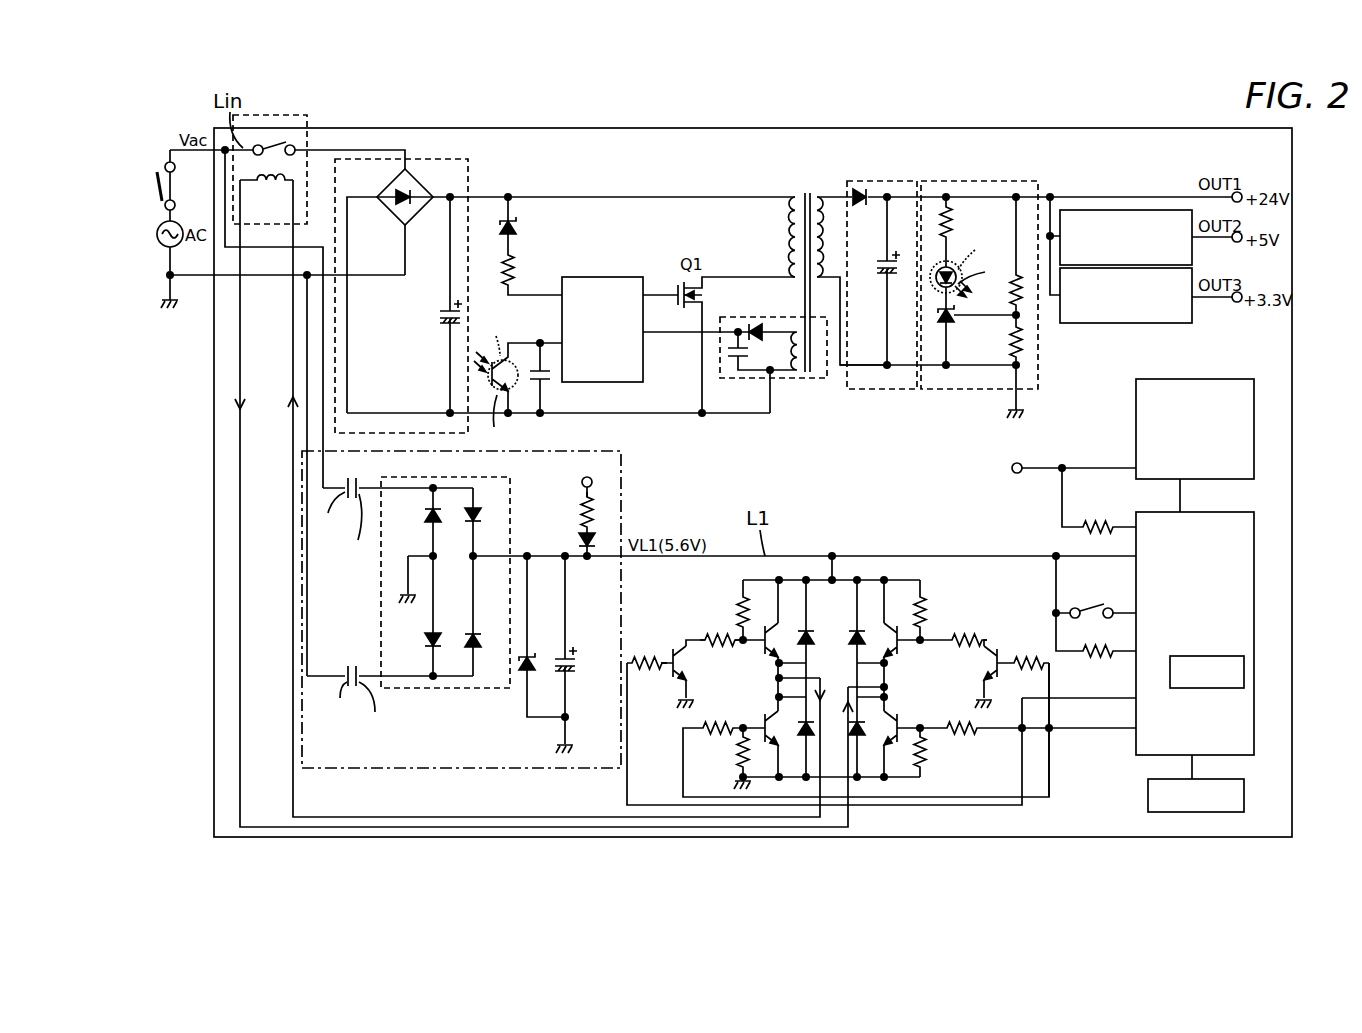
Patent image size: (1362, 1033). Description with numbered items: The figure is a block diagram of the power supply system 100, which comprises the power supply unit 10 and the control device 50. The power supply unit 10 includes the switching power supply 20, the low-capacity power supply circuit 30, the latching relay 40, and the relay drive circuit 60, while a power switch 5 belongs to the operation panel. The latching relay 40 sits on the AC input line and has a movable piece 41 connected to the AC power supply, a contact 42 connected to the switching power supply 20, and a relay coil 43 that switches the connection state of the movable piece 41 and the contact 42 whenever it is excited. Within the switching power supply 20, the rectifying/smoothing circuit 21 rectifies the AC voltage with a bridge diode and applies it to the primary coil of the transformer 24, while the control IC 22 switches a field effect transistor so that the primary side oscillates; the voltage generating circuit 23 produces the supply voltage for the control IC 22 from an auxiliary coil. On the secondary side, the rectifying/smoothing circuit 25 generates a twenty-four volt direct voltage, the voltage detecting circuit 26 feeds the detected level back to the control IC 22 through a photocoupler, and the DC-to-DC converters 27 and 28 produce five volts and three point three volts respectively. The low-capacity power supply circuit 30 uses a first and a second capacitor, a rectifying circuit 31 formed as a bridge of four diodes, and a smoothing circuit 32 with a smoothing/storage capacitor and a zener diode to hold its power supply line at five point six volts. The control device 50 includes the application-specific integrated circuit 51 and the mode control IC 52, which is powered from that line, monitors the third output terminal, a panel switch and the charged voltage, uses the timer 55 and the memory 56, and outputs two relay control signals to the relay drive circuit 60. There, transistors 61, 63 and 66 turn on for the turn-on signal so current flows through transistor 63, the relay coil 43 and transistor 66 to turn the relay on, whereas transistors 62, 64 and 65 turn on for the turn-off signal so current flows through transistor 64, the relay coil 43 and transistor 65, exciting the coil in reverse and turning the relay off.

The power switch 5 is at (156, 190).
The power supply unit 10 is at (578, 444).
The switching power supply 20 is at (765, 273).
The rectifying/smoothing circuit 21 is at (470, 165).
The control IC 22 is at (596, 277).
The voltage generating circuit 23 is at (757, 317).
The transformer 24 is at (802, 191).
The rectifying/smoothing circuit 25 is at (900, 181).
The voltage detecting circuit 26 is at (985, 181).
The DC-to-DC converter 27 is at (1103, 210).
The DC-to-DC converter 28 is at (1080, 324).
The low-capacity power supply circuit 30 is at (490, 609).
The rectifying circuit 31 is at (512, 485).
The smoothing circuit 32 is at (510, 713).
The latching relay 40 is at (310, 157).
The movable piece 41 is at (260, 145).
The contact 42 is at (293, 145).
The relay coil 43 is at (272, 186).
The control device 50 is at (1109, 609).
The application-specific integrated circuit 51 is at (1136, 386).
The mode control IC 52 is at (1216, 614).
The timer 55 is at (1244, 672).
The memory 56 is at (1244, 786).
The relay drive circuit 60 is at (838, 678).
The transistor 61 is at (672, 657).
The transistor 62 is at (995, 655).
The transistor 63 is at (762, 654).
The transistor 64 is at (903, 652).
The transistor 65 is at (762, 724).
The transistor 66 is at (898, 724).
The power supply system 100 is at (1100, 128).